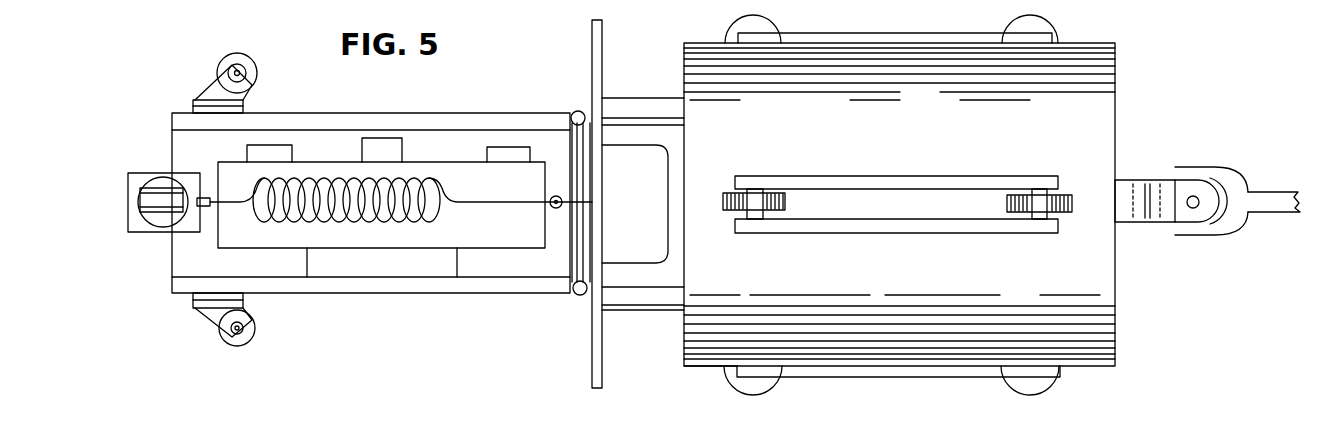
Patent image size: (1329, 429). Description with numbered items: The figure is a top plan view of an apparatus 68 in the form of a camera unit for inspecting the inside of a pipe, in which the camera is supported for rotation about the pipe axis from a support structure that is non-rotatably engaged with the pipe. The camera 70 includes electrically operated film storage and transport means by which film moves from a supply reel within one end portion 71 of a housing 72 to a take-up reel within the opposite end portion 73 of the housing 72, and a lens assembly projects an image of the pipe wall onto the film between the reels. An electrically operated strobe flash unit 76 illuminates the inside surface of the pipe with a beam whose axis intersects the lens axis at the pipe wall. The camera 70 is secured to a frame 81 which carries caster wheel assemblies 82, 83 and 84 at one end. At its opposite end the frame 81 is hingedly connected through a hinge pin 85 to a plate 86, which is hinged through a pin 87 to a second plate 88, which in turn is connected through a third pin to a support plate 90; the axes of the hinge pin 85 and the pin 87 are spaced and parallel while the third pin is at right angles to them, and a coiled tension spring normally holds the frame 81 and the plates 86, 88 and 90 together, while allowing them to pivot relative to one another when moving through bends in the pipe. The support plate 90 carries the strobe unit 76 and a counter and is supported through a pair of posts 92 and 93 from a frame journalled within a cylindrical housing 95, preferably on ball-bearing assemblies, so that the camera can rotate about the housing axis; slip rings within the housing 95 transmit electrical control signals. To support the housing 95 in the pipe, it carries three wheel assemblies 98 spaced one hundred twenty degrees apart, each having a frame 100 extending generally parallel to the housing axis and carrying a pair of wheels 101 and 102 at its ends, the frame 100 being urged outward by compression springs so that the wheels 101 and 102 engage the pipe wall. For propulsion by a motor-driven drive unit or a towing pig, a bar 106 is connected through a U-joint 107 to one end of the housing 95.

The apparatus 68 is at (1160, 61).
The camera 70 is at (465, 158).
The end portion 71 is at (520, 238).
The housing 72 is at (330, 180).
The end portion 73 is at (258, 250).
The strobe flash unit 76 is at (673, 160).
The frame 81 is at (432, 292).
The caster wheel assembly 82 is at (163, 230).
The caster wheel assembly 83 is at (252, 66).
The caster wheel assembly 84 is at (257, 351).
The hinge pin 85 is at (578, 110).
The plate 86 is at (574, 150).
The pin 87 is at (578, 298).
The second plate 88 is at (581, 160).
The support plate 90 is at (602, 352).
The post 92 is at (658, 298).
The post 93 is at (651, 110).
The cylindrical housing 95 is at (708, 355).
The wheel assembly 98 is at (1012, 178).
The frame 100 is at (905, 218).
The wheel 101 is at (783, 206).
The wheel 102 is at (1040, 212).
The bar 106 is at (1266, 216).
The U-joint 107 is at (1197, 170).